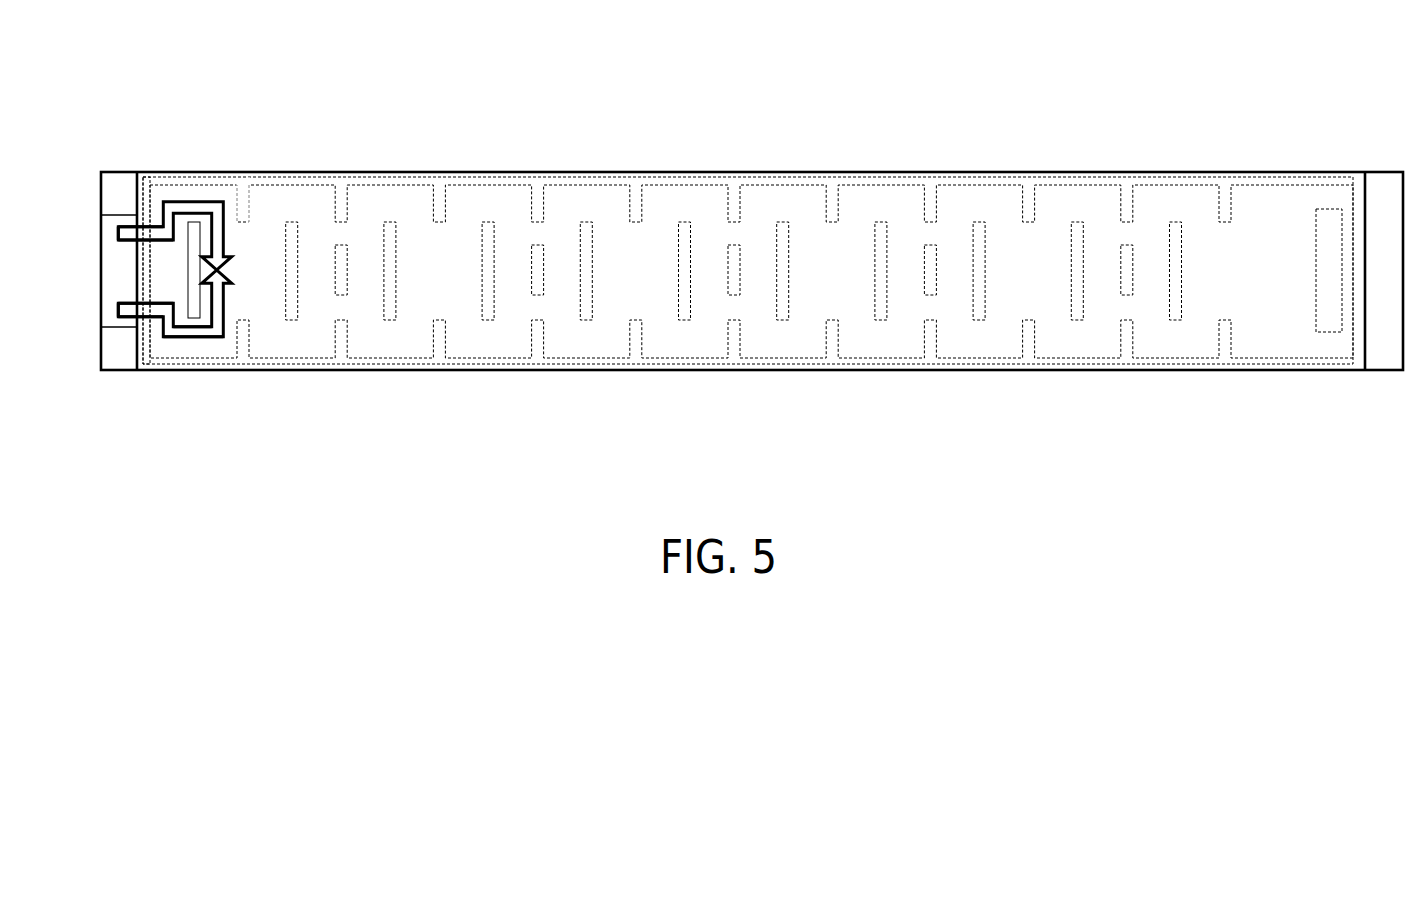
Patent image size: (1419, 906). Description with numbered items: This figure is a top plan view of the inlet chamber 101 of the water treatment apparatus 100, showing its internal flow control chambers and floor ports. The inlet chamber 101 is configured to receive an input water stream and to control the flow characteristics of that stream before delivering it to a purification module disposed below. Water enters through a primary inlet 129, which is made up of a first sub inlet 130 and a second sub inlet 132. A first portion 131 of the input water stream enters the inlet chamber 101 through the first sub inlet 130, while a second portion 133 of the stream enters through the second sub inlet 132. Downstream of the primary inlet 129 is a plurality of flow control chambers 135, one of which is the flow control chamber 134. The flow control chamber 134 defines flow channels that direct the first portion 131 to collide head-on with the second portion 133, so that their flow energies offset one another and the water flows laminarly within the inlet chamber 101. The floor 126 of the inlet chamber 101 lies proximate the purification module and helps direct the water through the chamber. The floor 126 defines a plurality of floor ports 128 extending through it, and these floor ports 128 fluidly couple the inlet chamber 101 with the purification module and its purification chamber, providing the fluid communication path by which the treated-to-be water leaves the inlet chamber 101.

The superconducting device 100 is at (862, 113).
The inlet chamber 101 is at (977, 158).
The floor 126 is at (288, 198).
The plurality of floor ports 128 is at (328, 197).
The primary inlet 129 is at (92, 270).
The first sub inlet 130 is at (108, 232).
The first portion of input water stream 131 is at (190, 198).
The second sub inlet 132 is at (108, 310).
The second portion of input water stream 133 is at (217, 333).
The flow control chamber 134 is at (155, 183).
The plurality of flow control chambers 135 is at (258, 160).